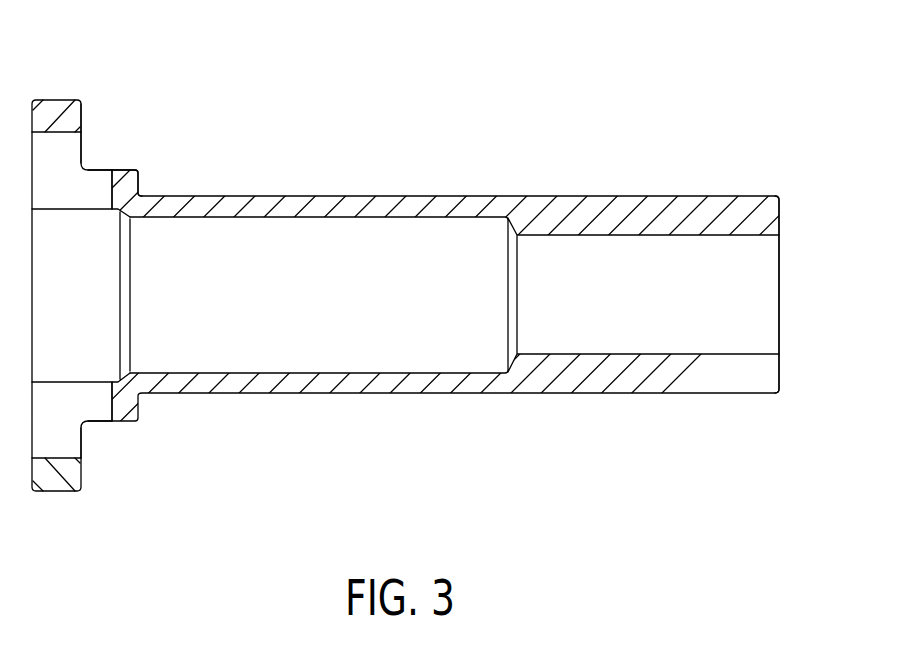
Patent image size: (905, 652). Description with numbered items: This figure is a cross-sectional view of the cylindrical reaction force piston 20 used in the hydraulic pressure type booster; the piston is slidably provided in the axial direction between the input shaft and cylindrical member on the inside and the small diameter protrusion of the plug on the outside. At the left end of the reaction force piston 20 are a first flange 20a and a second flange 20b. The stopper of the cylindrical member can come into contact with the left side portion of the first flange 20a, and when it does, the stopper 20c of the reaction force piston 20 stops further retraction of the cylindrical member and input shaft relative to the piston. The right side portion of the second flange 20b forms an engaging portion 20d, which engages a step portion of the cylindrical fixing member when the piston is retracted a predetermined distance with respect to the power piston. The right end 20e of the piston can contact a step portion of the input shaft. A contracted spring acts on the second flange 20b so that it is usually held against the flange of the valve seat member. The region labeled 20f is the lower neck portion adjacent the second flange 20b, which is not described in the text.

The reaction force piston 20 is at (506, 136).
The first flange 20a is at (133, 182).
The second flange 20b is at (58, 102).
The stopper 20c is at (111, 191).
The engaging portion 20d is at (83, 112).
The right end 20e is at (779, 208).
The lower neck 20f is at (112, 400).